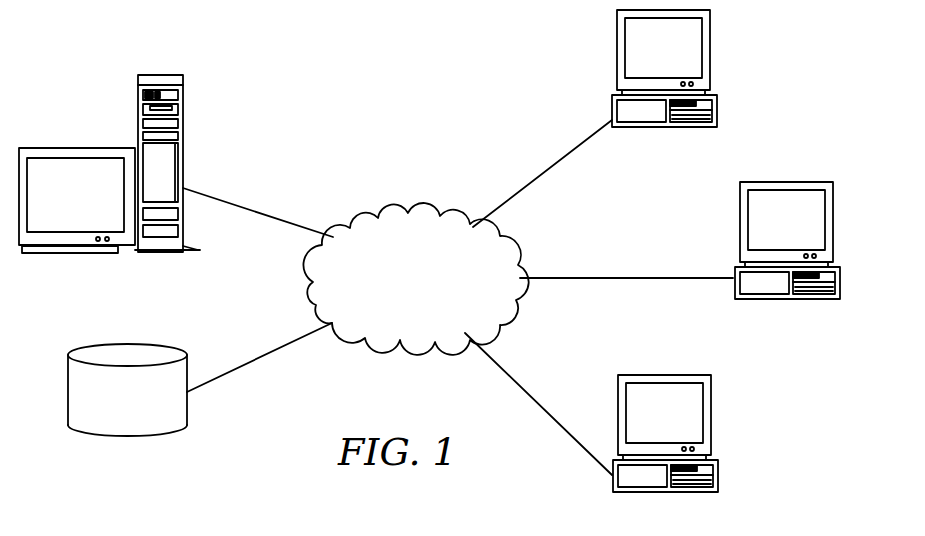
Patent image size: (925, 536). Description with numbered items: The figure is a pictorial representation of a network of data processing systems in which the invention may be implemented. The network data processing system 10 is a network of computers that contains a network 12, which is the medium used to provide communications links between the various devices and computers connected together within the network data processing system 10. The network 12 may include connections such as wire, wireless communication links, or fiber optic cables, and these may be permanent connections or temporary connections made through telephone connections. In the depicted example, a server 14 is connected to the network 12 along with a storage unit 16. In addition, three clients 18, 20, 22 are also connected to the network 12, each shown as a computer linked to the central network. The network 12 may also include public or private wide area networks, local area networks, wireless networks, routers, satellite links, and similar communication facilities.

The network data processing system 10 is at (272, 53).
The network 12 is at (432, 309).
The server 14 is at (138, 101).
The storage unit 16 is at (68, 391).
The client 18 is at (712, 58).
The client 20 is at (834, 223).
The client 22 is at (710, 420).